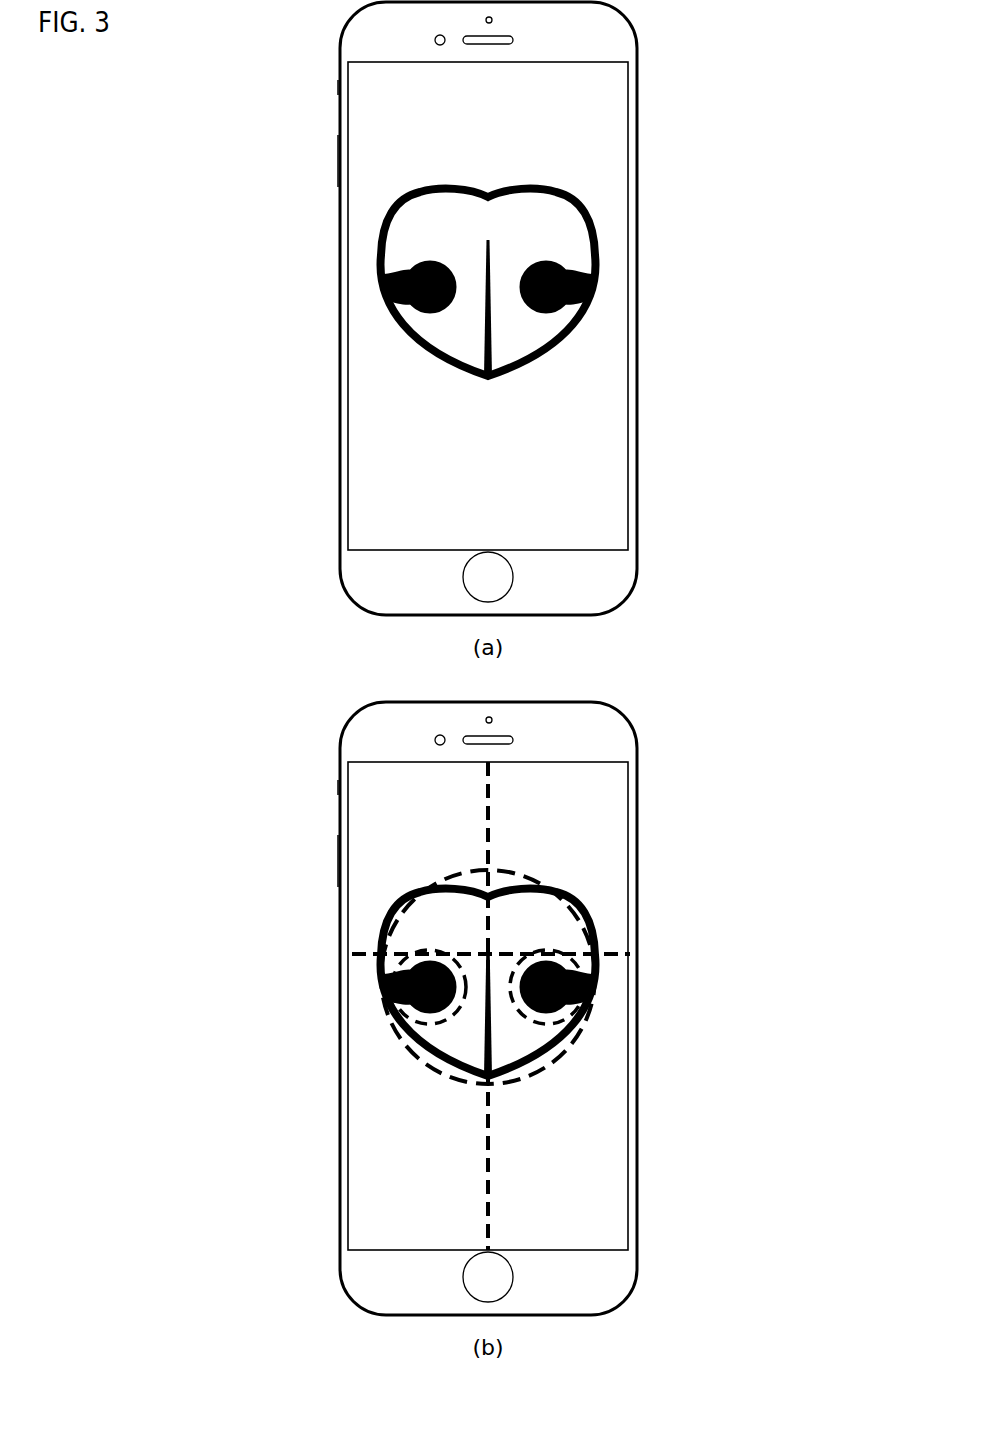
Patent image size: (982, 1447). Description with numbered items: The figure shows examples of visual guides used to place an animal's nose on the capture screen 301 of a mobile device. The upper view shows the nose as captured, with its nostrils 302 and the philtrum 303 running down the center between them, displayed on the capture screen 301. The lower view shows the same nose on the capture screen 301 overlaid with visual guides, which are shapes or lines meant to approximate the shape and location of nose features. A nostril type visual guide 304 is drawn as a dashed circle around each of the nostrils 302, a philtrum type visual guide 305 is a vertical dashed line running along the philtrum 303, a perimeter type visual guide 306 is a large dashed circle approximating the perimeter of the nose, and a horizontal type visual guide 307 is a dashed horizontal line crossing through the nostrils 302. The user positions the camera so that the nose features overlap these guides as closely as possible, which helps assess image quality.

The capture screen 301 is at (568, 128).
The nostrils 302 is at (420, 297).
The philtrum 303 is at (483, 347).
The nostril type visual guide 304 is at (390, 983).
The philtrum type visual guide 305 is at (488, 827).
The perimeter type visual guide 306 is at (430, 1064).
The horizontal type visual guide 307 is at (640, 950).